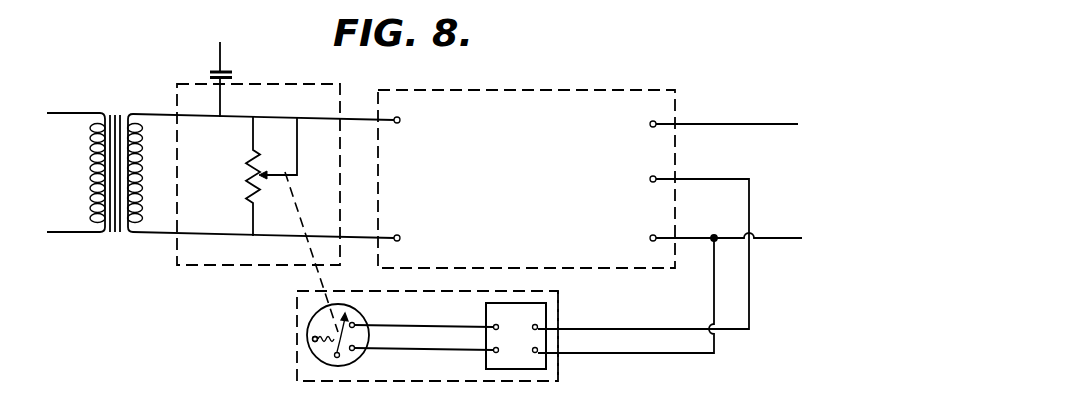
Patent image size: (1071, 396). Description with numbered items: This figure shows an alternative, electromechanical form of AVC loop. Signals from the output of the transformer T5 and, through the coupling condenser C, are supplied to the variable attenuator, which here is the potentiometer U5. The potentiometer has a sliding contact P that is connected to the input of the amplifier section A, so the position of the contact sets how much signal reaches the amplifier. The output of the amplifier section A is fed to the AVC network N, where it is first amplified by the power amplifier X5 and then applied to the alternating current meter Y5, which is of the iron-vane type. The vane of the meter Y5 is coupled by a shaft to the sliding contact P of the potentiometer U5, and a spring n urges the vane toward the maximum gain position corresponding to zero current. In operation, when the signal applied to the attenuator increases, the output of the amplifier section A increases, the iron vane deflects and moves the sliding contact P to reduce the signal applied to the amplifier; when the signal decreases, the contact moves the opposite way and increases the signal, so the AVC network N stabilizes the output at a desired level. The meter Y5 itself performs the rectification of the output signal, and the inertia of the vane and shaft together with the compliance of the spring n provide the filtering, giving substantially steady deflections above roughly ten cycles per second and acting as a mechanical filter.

The transformer T5 is at (131, 104).
The coupling condenser C is at (226, 66).
The potentiometer U5 is at (245, 176).
The sliding contact P is at (266, 170).
The amplifier section A is at (648, 93).
The alternating current meter Y5 is at (366, 316).
The spring n is at (318, 350).
The power amplifier X5 is at (486, 312).
The AVC network N is at (559, 301).